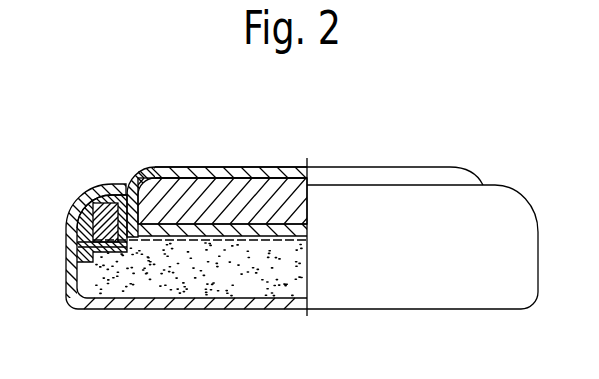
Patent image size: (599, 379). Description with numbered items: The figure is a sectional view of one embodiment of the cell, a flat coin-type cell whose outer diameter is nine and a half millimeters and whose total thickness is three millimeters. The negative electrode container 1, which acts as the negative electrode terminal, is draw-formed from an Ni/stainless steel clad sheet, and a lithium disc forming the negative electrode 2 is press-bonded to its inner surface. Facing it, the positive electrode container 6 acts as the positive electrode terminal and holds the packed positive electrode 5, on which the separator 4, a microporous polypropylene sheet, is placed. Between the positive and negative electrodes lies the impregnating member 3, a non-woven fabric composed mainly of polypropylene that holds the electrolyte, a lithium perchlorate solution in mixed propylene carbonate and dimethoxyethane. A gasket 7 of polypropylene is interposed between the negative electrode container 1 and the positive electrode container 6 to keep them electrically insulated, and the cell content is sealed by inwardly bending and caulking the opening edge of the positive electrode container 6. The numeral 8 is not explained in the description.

The negative electrode container 1 is at (243, 173).
The negative electrode 2 is at (203, 190).
The impregnating member 3 is at (162, 187).
The separator 4 is at (297, 241).
The positive electrode 5 is at (231, 287).
The positive electrode container 6 is at (152, 304).
The gasket 7 is at (80, 210).
The insulating ring 8 is at (112, 243).